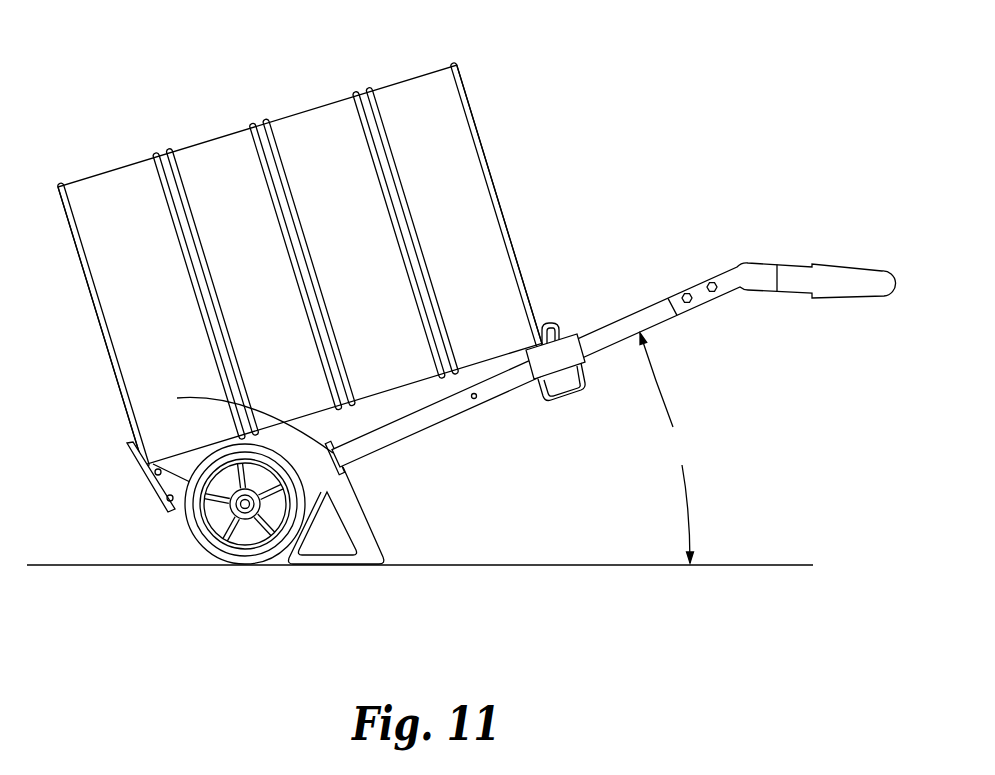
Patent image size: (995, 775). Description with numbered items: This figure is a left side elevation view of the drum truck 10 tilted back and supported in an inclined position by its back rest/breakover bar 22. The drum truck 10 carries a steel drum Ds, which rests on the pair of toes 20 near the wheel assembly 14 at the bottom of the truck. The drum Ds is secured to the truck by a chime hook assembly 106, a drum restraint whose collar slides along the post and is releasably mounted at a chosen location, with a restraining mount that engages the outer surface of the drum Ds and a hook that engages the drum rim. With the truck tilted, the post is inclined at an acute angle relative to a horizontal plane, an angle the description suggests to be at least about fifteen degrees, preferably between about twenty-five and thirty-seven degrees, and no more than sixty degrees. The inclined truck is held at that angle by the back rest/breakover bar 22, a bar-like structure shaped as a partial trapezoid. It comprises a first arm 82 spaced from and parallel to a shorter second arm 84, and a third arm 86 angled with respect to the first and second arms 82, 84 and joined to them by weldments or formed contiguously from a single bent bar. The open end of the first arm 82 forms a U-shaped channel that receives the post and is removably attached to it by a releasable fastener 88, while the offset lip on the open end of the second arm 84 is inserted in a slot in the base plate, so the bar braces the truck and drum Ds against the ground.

The drum truck 10 is at (697, 245).
The wheel assembly 14 is at (187, 543).
The toes 20 is at (140, 480).
The back rest/breakover bar 22 is at (303, 572).
The first arm 82 is at (360, 518).
The second arm 84 is at (275, 568).
The third arm 86 is at (345, 567).
The releasable fastener 88 is at (177, 398).
The chime hook assembly 106 is at (572, 342).
The drum Ds is at (405, 80).